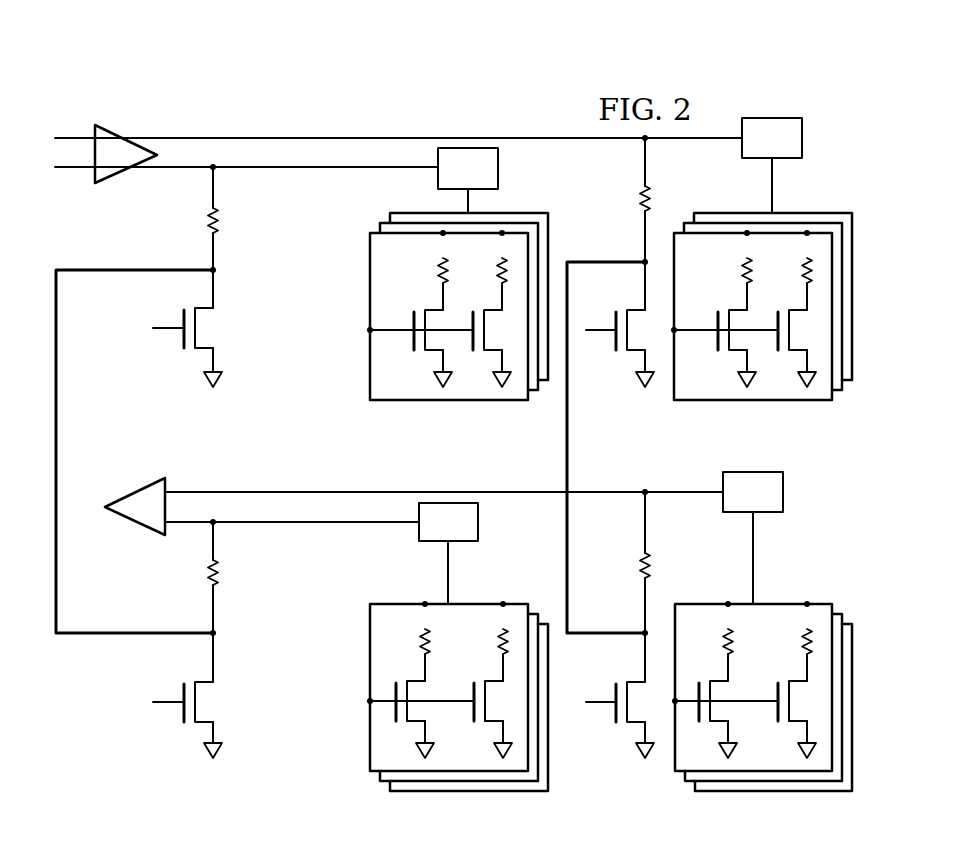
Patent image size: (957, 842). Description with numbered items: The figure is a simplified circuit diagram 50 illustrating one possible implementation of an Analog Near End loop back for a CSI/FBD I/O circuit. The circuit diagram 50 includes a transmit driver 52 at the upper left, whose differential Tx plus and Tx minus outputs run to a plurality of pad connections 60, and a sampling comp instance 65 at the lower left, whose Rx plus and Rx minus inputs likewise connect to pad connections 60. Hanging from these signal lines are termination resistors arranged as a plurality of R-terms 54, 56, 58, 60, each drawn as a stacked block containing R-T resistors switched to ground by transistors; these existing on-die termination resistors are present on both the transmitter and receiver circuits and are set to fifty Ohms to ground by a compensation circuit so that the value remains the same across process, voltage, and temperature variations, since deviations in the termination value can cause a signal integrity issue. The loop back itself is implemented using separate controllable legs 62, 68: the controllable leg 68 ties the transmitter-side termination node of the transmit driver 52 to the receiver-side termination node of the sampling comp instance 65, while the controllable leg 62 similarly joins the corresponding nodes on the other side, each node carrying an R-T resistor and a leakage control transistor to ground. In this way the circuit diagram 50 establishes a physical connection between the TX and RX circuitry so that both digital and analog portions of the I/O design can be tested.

The circuit diagram 50 is at (238, 74).
The transmit driver 52 is at (116, 127).
The R-term 54 is at (369, 280).
The R-term 56 is at (369, 723).
The R-term 58 is at (707, 398).
The pad connection 60 is at (498, 178).
The controllable leg 62 is at (605, 262).
The sampling comp instance 65 is at (132, 523).
The controllable leg 68 is at (134, 270).